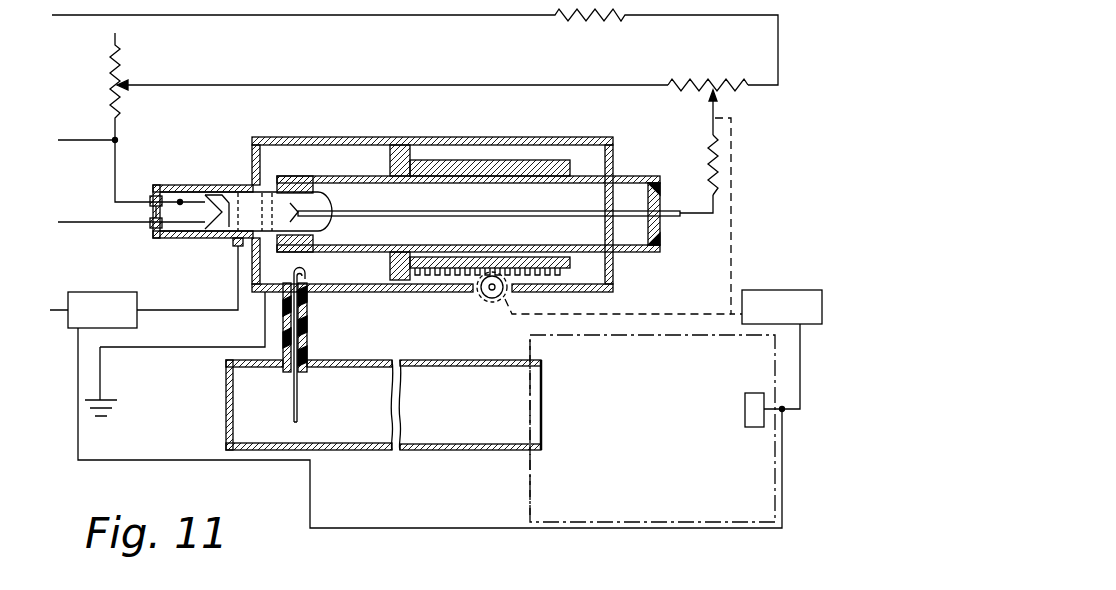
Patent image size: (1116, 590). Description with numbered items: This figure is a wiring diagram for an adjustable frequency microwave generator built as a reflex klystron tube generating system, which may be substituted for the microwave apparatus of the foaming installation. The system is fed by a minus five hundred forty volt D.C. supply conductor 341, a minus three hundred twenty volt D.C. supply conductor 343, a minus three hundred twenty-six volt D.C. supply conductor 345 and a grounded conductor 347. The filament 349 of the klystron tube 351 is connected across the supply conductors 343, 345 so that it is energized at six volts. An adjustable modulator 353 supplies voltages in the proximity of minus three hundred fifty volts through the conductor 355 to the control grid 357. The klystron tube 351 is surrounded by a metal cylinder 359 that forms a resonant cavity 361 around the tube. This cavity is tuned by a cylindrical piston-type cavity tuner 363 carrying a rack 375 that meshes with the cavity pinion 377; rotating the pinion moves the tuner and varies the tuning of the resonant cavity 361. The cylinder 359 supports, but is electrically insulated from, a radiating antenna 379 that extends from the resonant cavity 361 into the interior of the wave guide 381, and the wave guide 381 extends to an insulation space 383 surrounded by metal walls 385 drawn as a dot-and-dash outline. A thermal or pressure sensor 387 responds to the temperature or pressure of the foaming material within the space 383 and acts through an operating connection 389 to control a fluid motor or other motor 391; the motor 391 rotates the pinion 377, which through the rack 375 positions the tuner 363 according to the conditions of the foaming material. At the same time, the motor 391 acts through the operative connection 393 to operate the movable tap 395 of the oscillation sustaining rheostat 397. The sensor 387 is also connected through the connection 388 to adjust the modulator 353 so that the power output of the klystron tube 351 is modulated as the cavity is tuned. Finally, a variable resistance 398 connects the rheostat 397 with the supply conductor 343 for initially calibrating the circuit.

The supply conductor 341 is at (222, 16).
The supply conductor 343 is at (72, 140).
The supply conductor 345 is at (72, 222).
The grounded conductor 347 is at (102, 374).
The filament 349 is at (218, 214).
The klystron tube 351 is at (249, 185).
The adjustable modulator 353 is at (107, 297).
The conductor 355 is at (162, 312).
The control grid 357 is at (236, 244).
The metal cylinder 359 is at (281, 137).
The resonant cavity 361 is at (341, 150).
The cavity tuner 363 is at (468, 162).
The rack 375 is at (436, 278).
The cavity pinion 377 is at (483, 296).
The radiating antenna 379 is at (299, 400).
The wave guide 381 is at (340, 450).
The insulation space 383 is at (652, 428).
The metal walls 385 is at (530, 494).
The thermal or pressure sensor 387 is at (752, 428).
The connection 388 is at (784, 497).
The operating connection 389 is at (800, 402).
The motor 391 is at (784, 298).
The operative connection 393 is at (735, 196).
The movable tap 395 is at (716, 111).
The oscillation sustaining rheostat 397 is at (694, 86).
The variable resistance 398 is at (120, 70).